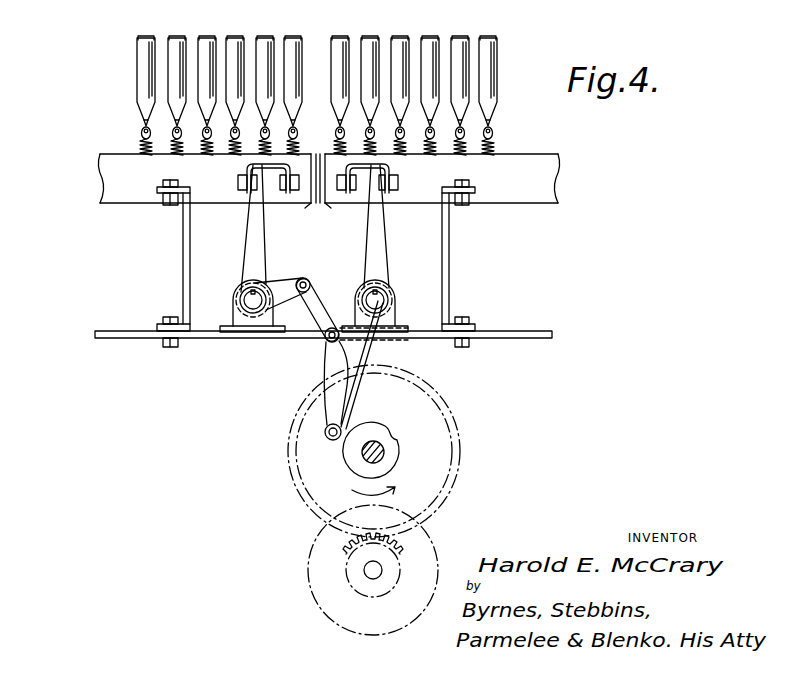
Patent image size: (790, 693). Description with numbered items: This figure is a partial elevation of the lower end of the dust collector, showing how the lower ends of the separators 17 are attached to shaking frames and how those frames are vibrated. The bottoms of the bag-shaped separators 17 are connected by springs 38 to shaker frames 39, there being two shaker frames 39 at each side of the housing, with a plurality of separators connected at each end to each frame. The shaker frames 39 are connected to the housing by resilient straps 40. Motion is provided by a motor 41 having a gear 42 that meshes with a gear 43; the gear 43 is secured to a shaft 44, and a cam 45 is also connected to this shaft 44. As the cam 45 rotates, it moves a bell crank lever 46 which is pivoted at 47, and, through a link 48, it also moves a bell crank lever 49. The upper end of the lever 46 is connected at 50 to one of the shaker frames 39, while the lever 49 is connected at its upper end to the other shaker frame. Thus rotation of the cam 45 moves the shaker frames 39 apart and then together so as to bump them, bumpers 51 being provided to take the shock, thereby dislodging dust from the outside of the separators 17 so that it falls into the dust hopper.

The separators 17 is at (233, 40).
The springs 38 is at (496, 150).
The shaker frames 39 is at (118, 178).
The resilient straps 40 is at (184, 262).
The motor 41 is at (308, 585).
The gear 42 is at (345, 556).
The gear 43 is at (305, 515).
The shaft 44 is at (386, 455).
The cam 45 is at (373, 417).
The bell crank lever 46 is at (386, 237).
The pivot 47 is at (388, 297).
The link 48 is at (318, 302).
The bell crank lever 49 is at (252, 268).
The connection 50 is at (399, 171).
The bumpers 51 is at (330, 209).